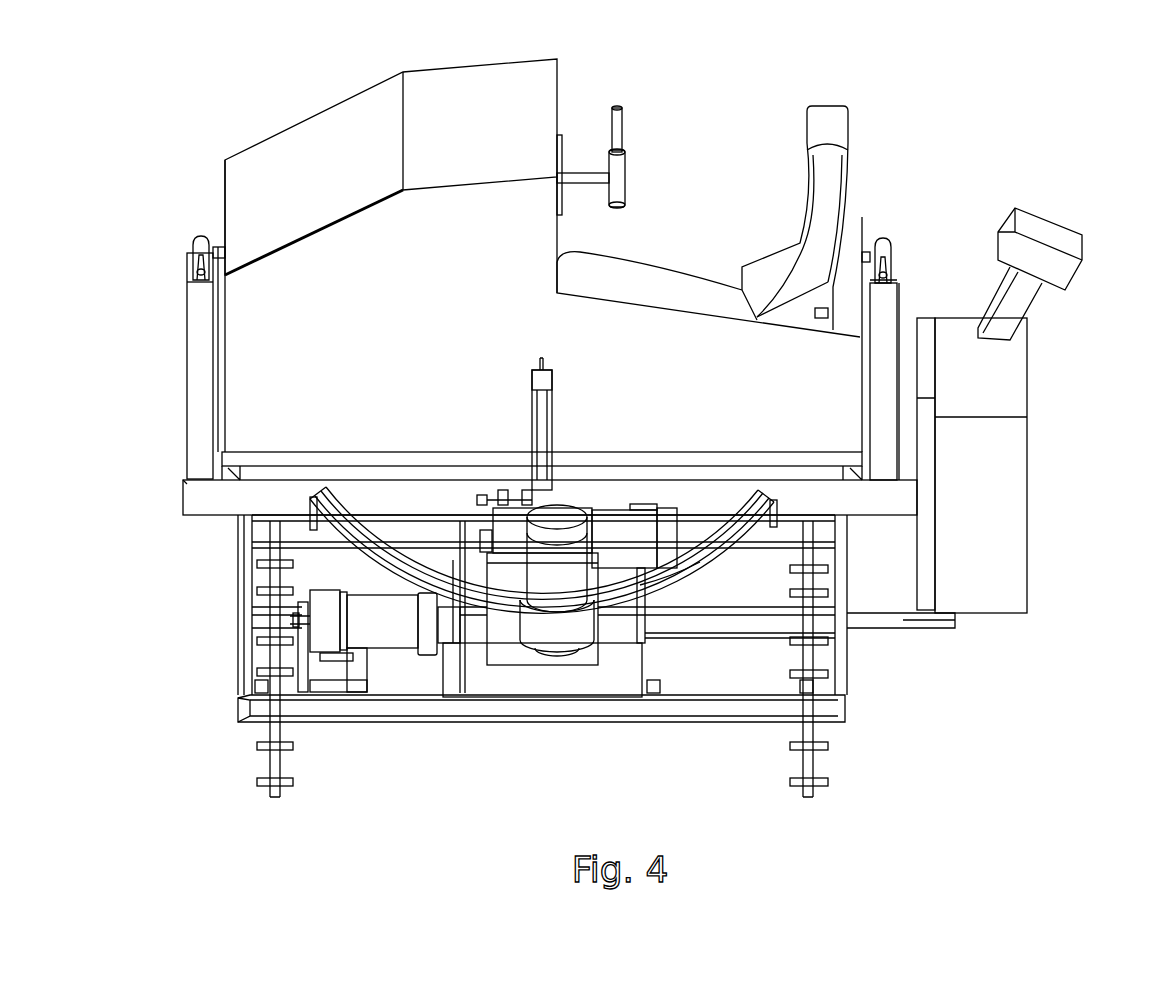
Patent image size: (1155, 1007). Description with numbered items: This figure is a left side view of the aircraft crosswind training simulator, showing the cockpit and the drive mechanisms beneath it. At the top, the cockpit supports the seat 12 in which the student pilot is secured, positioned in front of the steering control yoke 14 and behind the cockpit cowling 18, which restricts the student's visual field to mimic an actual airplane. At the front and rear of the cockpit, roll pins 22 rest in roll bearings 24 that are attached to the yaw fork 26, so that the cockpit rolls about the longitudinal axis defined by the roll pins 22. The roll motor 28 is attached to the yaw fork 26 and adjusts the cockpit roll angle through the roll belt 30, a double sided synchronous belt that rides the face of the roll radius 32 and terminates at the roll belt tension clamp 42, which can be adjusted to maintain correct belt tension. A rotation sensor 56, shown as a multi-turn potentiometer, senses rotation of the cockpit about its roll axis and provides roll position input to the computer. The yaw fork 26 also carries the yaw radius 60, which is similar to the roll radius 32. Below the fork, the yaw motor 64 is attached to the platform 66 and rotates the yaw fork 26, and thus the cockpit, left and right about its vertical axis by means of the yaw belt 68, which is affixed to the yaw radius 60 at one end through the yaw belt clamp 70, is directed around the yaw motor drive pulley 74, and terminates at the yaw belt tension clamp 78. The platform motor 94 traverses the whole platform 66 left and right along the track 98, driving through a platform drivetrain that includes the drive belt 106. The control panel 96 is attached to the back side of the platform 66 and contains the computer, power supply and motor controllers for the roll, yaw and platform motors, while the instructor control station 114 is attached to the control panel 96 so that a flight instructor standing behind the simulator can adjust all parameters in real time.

The seat 12 is at (830, 120).
The steering control yoke 14 is at (617, 130).
The cockpit cowling 18 is at (313, 133).
The roll pins 22 is at (216, 250).
The roll bearings 24 is at (195, 240).
The yaw fork 26 is at (200, 350).
The roll motor 28 is at (668, 510).
The roll belt 30 is at (542, 420).
The roll radius 32 is at (550, 403).
The roll belt tension clamp 42 is at (547, 382).
The rotation sensor 56 is at (480, 495).
The yaw radius 60 is at (330, 502).
The yaw motor 64 is at (557, 513).
The platform 66 is at (575, 710).
The yaw belt 68 is at (692, 580).
The yaw belt clamp 70 is at (781, 505).
The yaw motor drive pulley 74 is at (545, 645).
The yaw belt tension clamp 78 is at (312, 507).
The platform motor 94 is at (385, 632).
The control panel 96 is at (1010, 478).
The track 98 is at (272, 770).
The drive belt 106 is at (303, 660).
The instructor control station 114 is at (1040, 228).